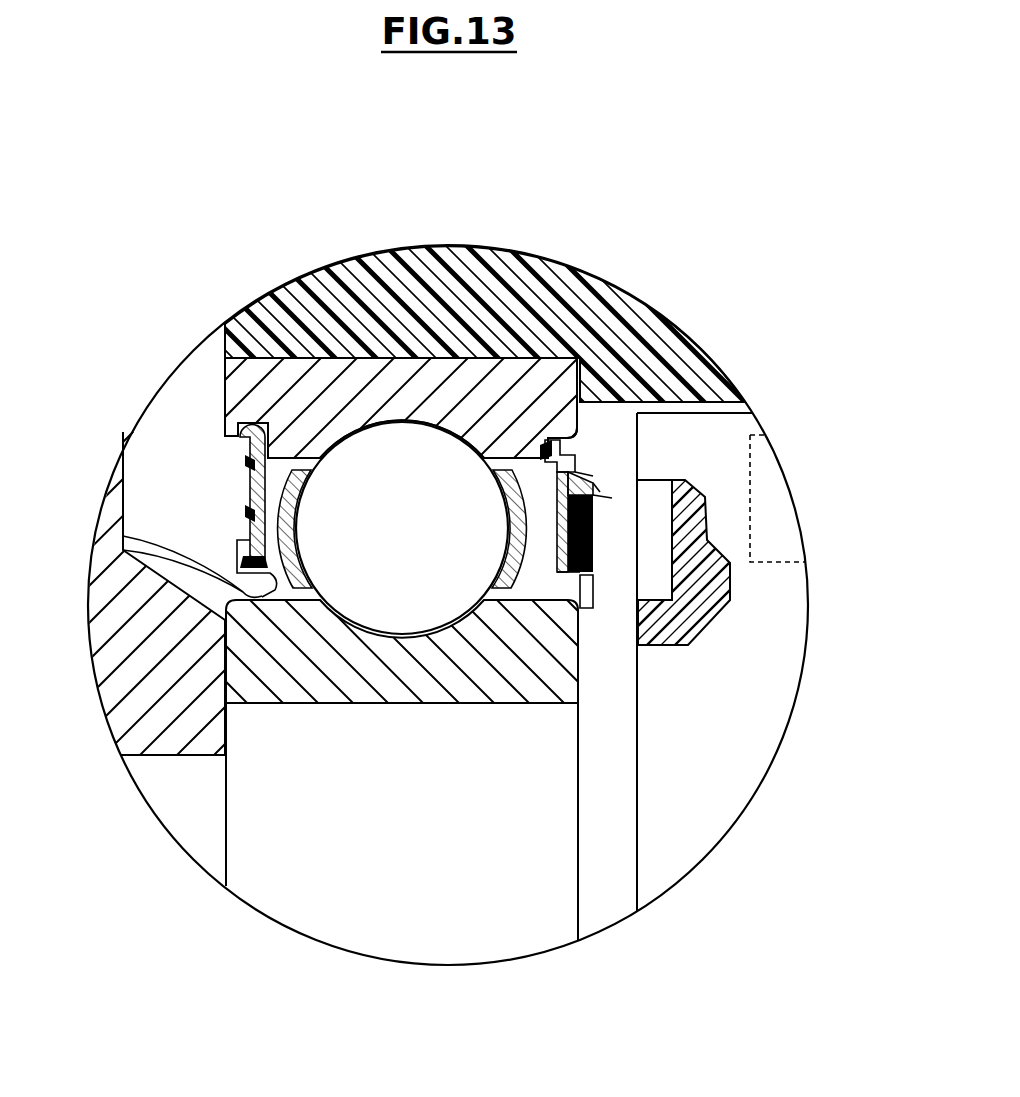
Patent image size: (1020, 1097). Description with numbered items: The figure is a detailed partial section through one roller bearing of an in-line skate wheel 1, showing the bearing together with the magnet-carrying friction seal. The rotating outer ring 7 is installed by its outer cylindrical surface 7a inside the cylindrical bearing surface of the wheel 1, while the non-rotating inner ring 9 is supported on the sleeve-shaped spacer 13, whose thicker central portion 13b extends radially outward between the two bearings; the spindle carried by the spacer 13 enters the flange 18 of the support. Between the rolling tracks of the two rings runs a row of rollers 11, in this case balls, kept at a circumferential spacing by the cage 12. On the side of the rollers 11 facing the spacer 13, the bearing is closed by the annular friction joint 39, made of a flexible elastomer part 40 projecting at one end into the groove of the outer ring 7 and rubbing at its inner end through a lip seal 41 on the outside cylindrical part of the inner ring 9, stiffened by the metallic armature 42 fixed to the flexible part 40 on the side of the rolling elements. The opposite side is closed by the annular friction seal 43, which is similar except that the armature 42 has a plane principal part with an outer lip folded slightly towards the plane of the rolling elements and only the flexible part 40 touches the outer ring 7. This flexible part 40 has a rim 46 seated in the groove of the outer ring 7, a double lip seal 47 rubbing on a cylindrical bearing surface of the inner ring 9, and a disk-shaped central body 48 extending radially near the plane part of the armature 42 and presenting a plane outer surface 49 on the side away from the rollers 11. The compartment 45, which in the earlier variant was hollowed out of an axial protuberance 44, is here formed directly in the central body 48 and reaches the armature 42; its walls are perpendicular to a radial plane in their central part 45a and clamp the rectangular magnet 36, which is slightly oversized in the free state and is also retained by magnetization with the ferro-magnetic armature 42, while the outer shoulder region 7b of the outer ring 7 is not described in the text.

The wheel 1 is at (570, 254).
The outer ring 7 is at (460, 388).
The outer cylindrical surface 7a is at (392, 358).
The outer ring shoulder 7b is at (580, 375).
The inner ring 9 is at (553, 675).
The rollers 11 is at (397, 478).
The cage 12 is at (291, 458).
The spacer 13 is at (724, 858).
The central portion 13b is at (707, 790).
The flange 18 is at (100, 507).
The magnet 36 is at (663, 512).
The annular friction joint 39 is at (232, 472).
The flexible part 40 is at (245, 493).
The lip seal 41 is at (123, 536).
The armature 42 is at (245, 512).
The annular friction seal 43 is at (612, 470).
The axial protuberance 44 is at (598, 490).
The compartment 45 is at (637, 478).
The central part 45a is at (585, 577).
The rim 46 is at (544, 438).
The double lip seal 47 is at (578, 632).
The central body 48 is at (590, 478).
The plane outer surface 49 is at (612, 498).